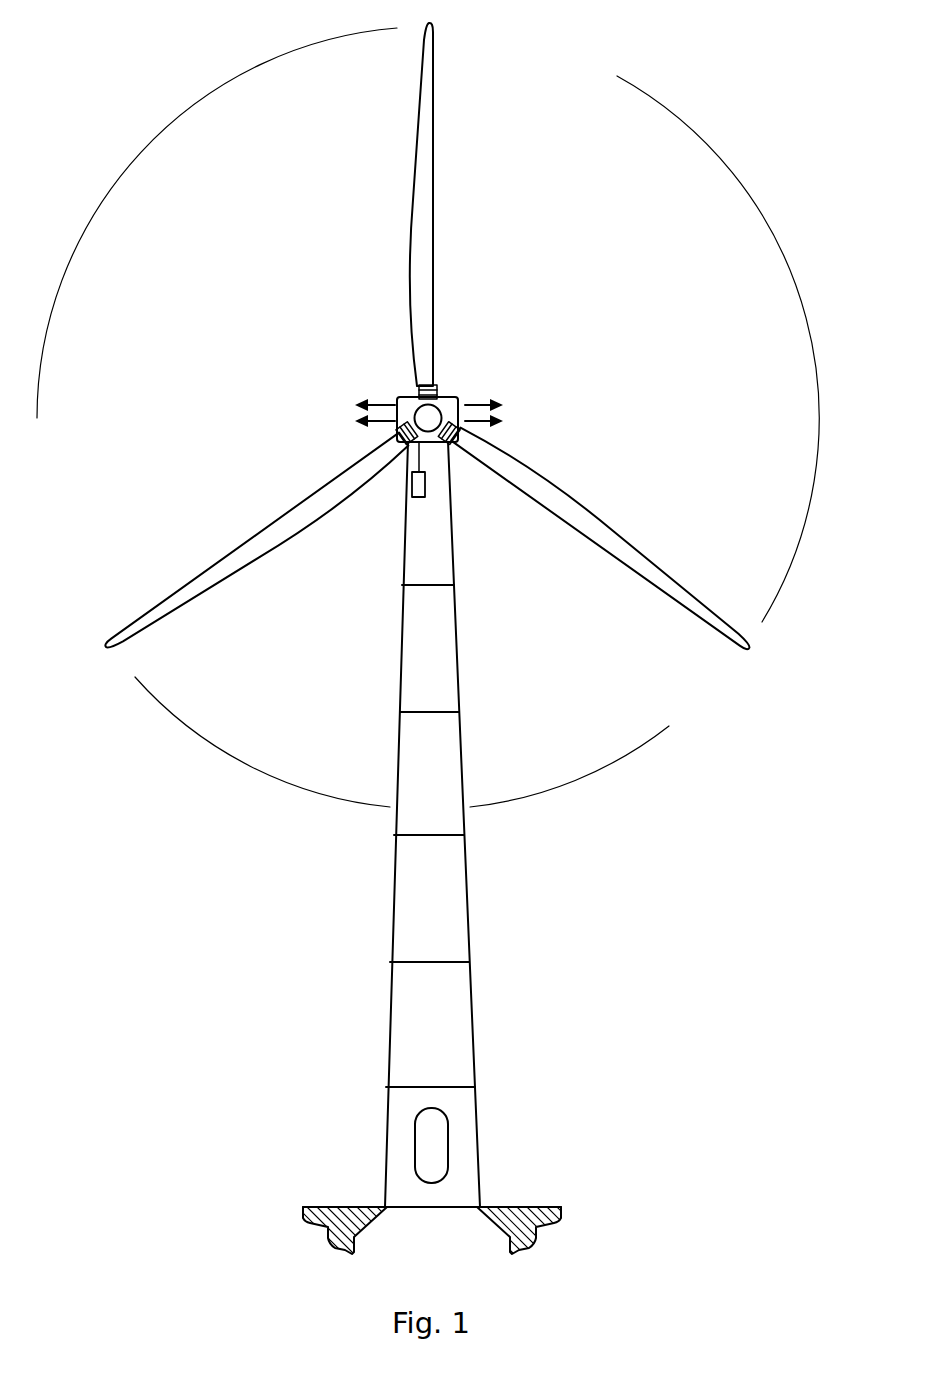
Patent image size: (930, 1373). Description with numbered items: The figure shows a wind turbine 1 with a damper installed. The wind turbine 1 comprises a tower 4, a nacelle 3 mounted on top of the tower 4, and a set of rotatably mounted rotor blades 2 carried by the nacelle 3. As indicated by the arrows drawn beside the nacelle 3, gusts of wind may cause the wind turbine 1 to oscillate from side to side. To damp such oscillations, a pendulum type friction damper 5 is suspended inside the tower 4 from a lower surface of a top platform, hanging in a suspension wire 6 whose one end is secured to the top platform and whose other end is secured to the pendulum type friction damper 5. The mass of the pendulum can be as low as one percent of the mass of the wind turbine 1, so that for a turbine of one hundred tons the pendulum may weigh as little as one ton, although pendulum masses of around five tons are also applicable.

The wind turbine 1 is at (428, 646).
The rotor blades 2 is at (423, 262).
The nacelle 3 is at (450, 402).
The tower 4 is at (447, 633).
The pendulum type friction damper 5 is at (414, 492).
The suspension wire 6 is at (410, 458).